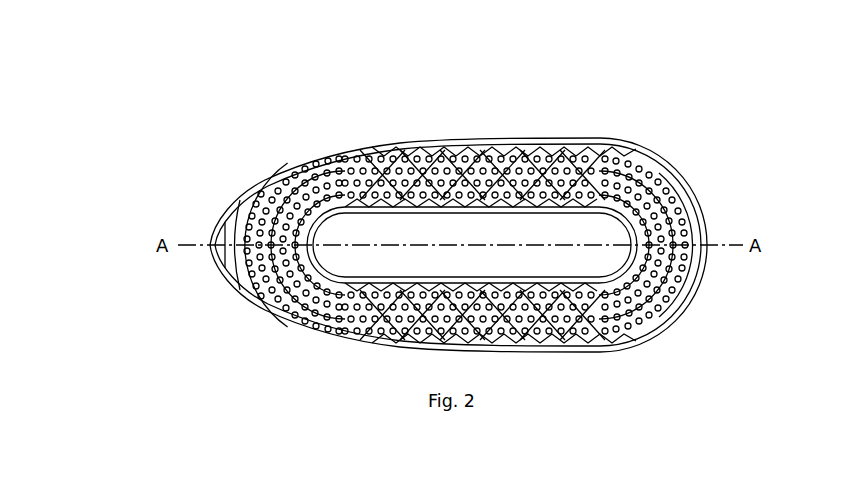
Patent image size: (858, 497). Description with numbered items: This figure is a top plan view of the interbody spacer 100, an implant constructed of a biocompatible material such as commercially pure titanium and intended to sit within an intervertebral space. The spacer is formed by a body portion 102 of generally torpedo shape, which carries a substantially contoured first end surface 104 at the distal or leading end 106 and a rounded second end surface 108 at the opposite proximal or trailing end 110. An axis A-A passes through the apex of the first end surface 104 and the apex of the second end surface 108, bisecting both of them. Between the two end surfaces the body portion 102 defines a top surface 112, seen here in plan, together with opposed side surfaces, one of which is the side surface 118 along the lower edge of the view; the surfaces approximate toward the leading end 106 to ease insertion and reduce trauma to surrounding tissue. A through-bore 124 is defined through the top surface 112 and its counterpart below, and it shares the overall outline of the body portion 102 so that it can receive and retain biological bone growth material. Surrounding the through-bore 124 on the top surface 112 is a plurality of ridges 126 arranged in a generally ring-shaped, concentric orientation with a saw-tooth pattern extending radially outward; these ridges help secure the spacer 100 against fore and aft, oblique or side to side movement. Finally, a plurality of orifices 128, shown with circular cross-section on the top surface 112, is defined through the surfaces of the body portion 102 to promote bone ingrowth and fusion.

The interbody spacer 100 is at (628, 124).
The body portion 102 is at (560, 343).
The first end surface 104 is at (217, 227).
The distal or leading end 106 is at (170, 215).
The second end surface 108 is at (707, 230).
The proximal or trailing end 110 is at (712, 295).
The top surface 112 is at (296, 167).
The side surface 118 is at (362, 338).
The through-bore 124 is at (425, 236).
The plurality of ridges 126 is at (268, 298).
The plurality of orifices 128 is at (681, 176).